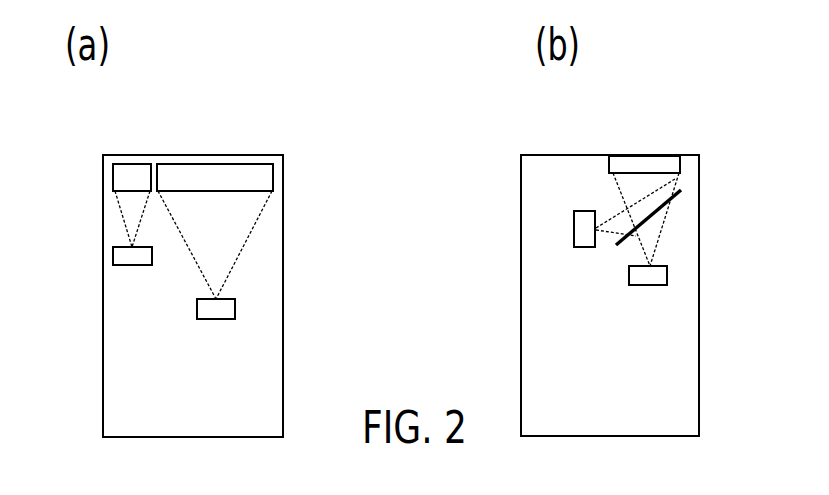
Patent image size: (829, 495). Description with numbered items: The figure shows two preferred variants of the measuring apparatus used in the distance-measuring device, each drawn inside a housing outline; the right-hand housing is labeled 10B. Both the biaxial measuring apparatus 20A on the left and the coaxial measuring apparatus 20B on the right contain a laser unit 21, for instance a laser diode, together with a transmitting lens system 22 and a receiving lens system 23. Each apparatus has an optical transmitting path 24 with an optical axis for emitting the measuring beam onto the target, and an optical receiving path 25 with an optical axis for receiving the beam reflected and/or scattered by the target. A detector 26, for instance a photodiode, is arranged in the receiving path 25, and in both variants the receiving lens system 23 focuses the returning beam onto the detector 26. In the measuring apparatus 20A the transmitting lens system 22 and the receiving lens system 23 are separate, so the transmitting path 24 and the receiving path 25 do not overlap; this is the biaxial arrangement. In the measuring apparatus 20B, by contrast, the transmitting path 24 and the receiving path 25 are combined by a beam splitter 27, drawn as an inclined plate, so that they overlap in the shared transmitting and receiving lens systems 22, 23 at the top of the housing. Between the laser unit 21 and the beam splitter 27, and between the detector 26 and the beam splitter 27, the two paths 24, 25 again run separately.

The image display device housing 10B is at (531, 154).
The measuring apparatus 20A is at (175, 150).
The measuring apparatus 20B is at (594, 150).
The laser unit 21 is at (113, 256).
The transmitting lens system 22 is at (113, 177).
The receiving lens system 23 is at (273, 178).
The optical transmitting path 24 is at (120, 216).
The optical receiving path 25 is at (251, 228).
The detector 26 is at (235, 310).
The beam splitter 27 is at (681, 192).